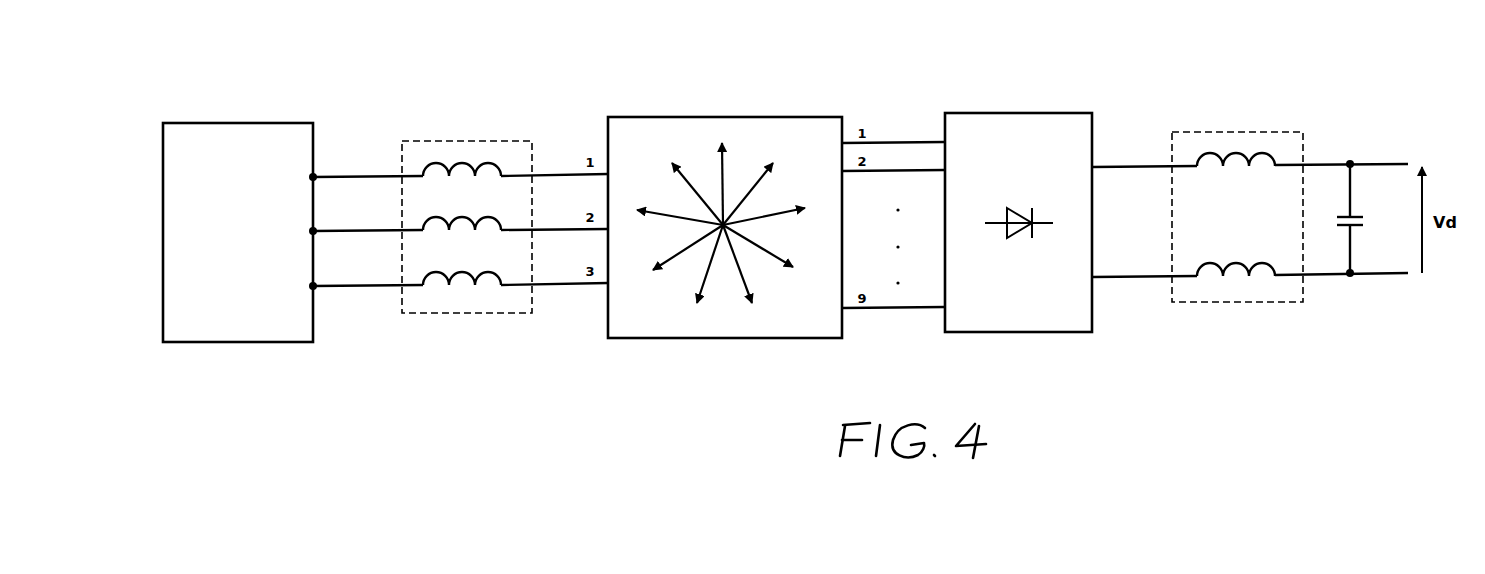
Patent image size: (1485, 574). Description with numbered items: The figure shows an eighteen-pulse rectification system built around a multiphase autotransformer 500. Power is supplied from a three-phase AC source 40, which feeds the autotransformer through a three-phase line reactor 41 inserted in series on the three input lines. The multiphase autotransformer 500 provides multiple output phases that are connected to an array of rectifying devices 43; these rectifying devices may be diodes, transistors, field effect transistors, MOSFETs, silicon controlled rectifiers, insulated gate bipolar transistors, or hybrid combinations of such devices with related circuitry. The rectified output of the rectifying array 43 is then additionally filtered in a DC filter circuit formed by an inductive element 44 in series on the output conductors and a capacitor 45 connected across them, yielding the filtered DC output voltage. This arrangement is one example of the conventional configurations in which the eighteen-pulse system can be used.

The three-phase AC source 40 is at (256, 112).
The three-phase line reactor 41 is at (456, 130).
The multiphase autotransformer 500 is at (673, 105).
The array of rectifying devices 43 is at (981, 100).
The inductive element 44 is at (1211, 117).
The capacitor 45 is at (1376, 200).